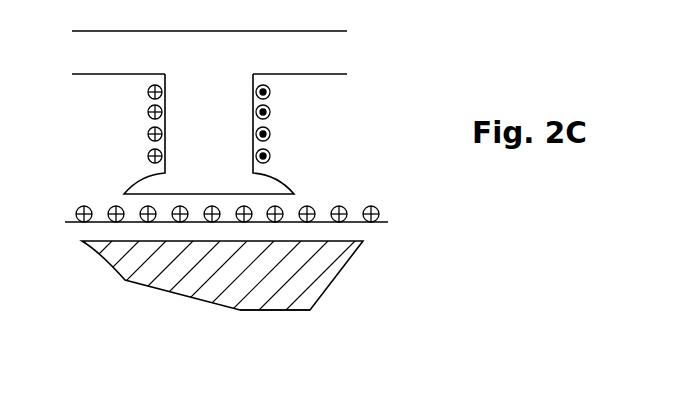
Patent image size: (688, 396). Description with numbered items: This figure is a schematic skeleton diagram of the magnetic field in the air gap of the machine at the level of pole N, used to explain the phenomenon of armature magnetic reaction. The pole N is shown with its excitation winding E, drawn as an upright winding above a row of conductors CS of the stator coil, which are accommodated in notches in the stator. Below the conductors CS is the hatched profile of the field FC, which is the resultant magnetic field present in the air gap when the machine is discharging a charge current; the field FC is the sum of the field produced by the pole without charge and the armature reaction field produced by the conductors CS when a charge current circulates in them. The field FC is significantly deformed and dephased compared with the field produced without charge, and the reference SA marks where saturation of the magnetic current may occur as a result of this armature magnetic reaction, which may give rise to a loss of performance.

The excitation winding E is at (321, 117).
The conductors of the stator coil CS is at (396, 198).
The resultant magnetic field FC is at (332, 263).
The saturation of the magnetic current SA is at (274, 311).